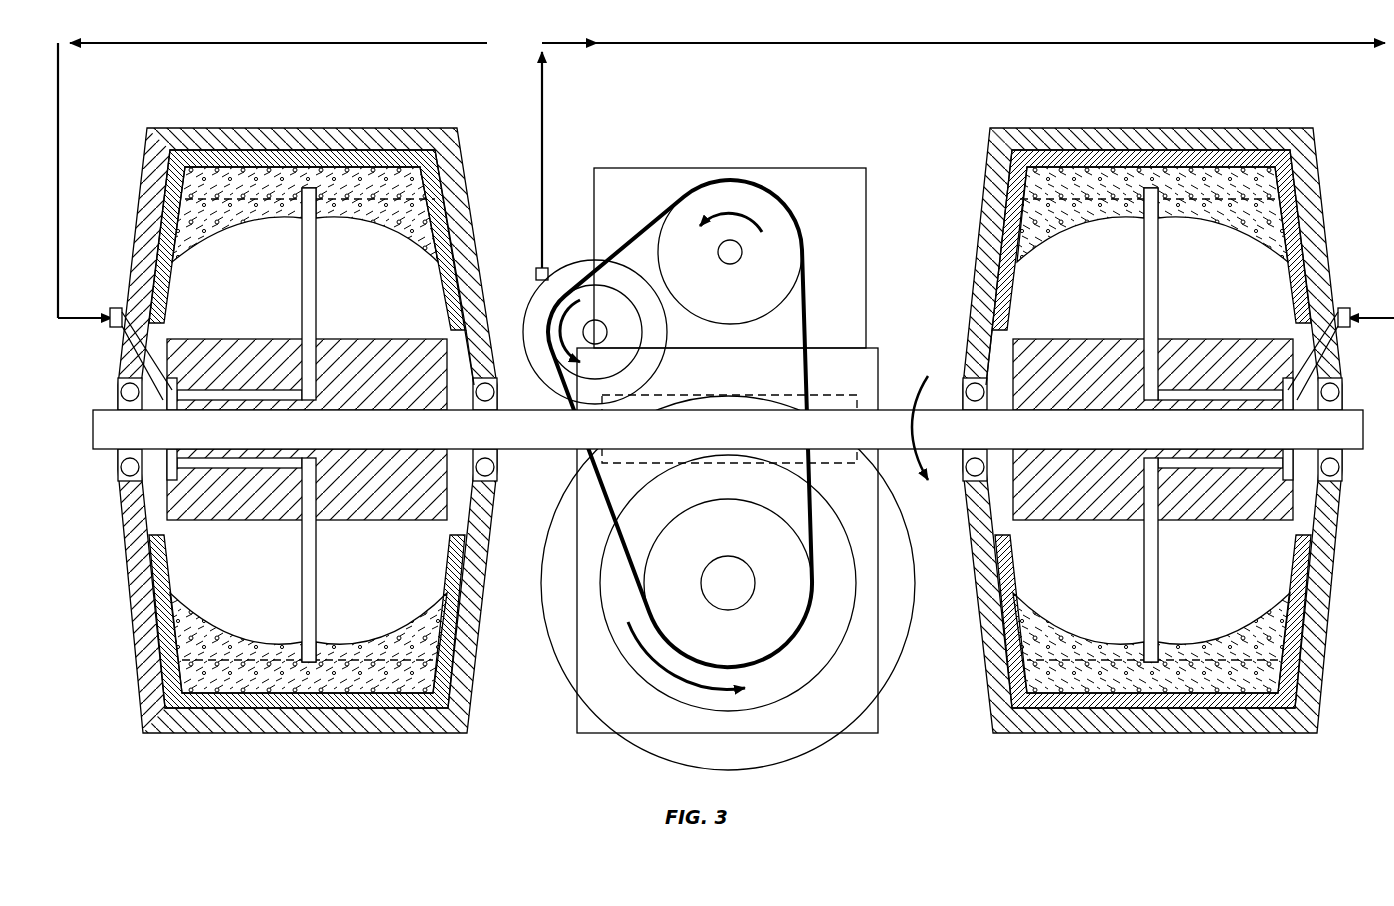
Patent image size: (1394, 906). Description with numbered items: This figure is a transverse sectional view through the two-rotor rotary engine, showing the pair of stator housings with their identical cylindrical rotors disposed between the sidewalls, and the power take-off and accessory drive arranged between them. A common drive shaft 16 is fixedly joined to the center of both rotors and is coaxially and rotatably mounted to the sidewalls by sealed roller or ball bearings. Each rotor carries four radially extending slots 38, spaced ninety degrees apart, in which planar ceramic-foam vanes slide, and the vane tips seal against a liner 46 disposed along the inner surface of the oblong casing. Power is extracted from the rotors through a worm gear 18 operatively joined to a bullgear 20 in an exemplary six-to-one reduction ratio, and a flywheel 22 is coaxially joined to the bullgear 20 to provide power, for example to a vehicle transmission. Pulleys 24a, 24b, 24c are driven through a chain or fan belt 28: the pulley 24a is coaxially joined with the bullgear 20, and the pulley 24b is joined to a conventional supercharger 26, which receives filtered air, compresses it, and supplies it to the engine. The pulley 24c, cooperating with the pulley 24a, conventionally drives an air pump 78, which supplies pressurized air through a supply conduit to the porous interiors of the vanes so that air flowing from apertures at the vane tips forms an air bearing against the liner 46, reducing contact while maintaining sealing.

The drive shaft 16 is at (530, 452).
The worm gear 18 is at (739, 441).
The bullgear 20 is at (803, 684).
The flywheel 22 is at (897, 668).
The pulley 24a is at (791, 636).
The pulley 24b is at (761, 303).
The pulley 24c is at (623, 318).
The supercharger 26 is at (790, 168).
The fan belt 28 is at (814, 300).
The slots 38 is at (1186, 425).
The liner 46 is at (1151, 429).
The air pump 78 is at (656, 374).